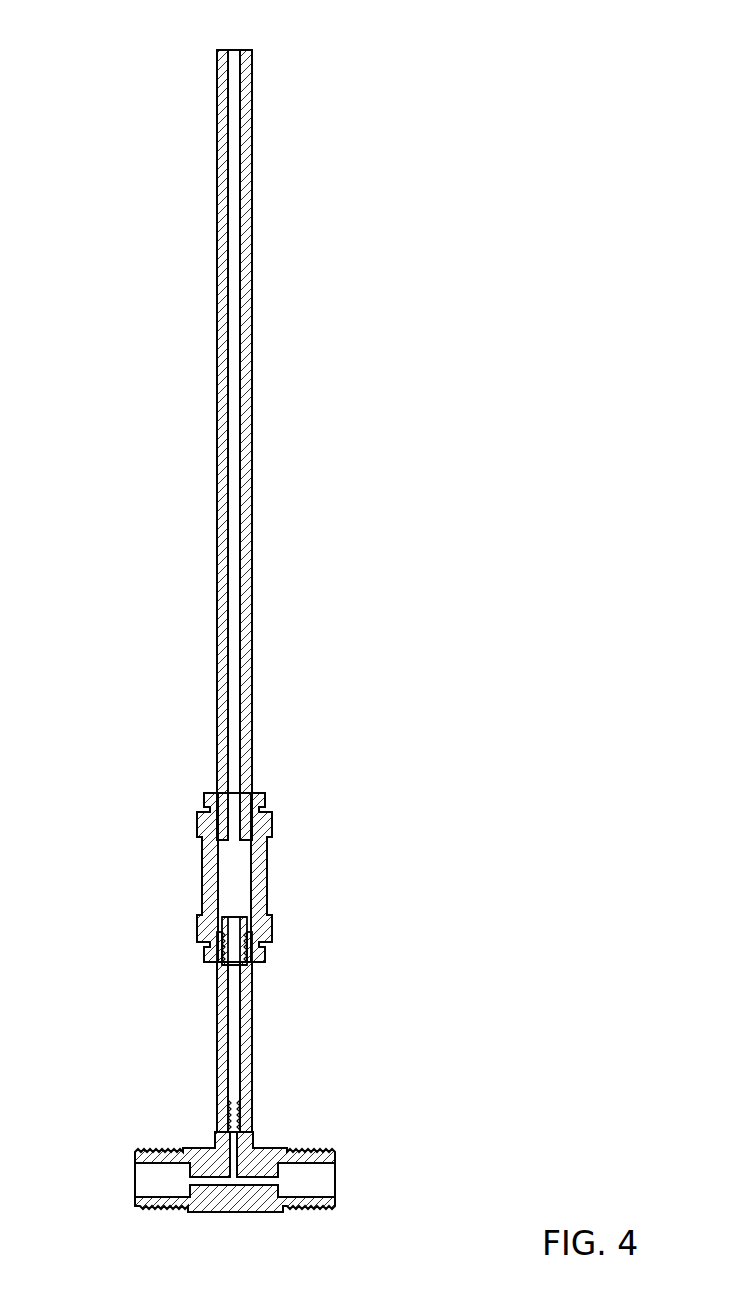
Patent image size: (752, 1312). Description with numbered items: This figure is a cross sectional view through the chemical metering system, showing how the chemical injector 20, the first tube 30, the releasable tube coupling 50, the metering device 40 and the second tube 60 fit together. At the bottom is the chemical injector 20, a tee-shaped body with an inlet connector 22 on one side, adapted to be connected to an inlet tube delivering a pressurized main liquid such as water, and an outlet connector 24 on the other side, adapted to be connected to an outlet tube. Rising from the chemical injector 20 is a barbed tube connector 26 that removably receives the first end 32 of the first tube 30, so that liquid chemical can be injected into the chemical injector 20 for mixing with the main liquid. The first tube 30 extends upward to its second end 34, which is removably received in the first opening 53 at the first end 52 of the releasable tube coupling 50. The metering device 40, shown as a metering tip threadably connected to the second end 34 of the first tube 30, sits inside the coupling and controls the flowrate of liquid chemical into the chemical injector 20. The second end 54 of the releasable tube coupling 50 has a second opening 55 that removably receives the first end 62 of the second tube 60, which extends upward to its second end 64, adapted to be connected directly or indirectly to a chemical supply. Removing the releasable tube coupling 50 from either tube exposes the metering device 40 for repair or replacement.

The chemical injector 20 is at (230, 1218).
The inlet connector 22 is at (135, 1176).
The outlet connector 24 is at (335, 1178).
The barbed tube connector 26 is at (243, 1112).
The first tube 30 is at (218, 1045).
The first end of the first tube 32 is at (217, 1125).
The second end of the first tube 34 is at (222, 935).
The metering device 40 is at (226, 915).
The releasable tube coupling 50 is at (272, 883).
The first end of the releasable tube coupling 52 is at (210, 962).
The first opening 53 is at (253, 963).
The second end of the releasable tube coupling 54 is at (258, 793).
The second opening 55 is at (217, 792).
The second tube 60 is at (252, 463).
The first end of the second tube 62 is at (236, 843).
The second end of the second tube 64 is at (236, 50).